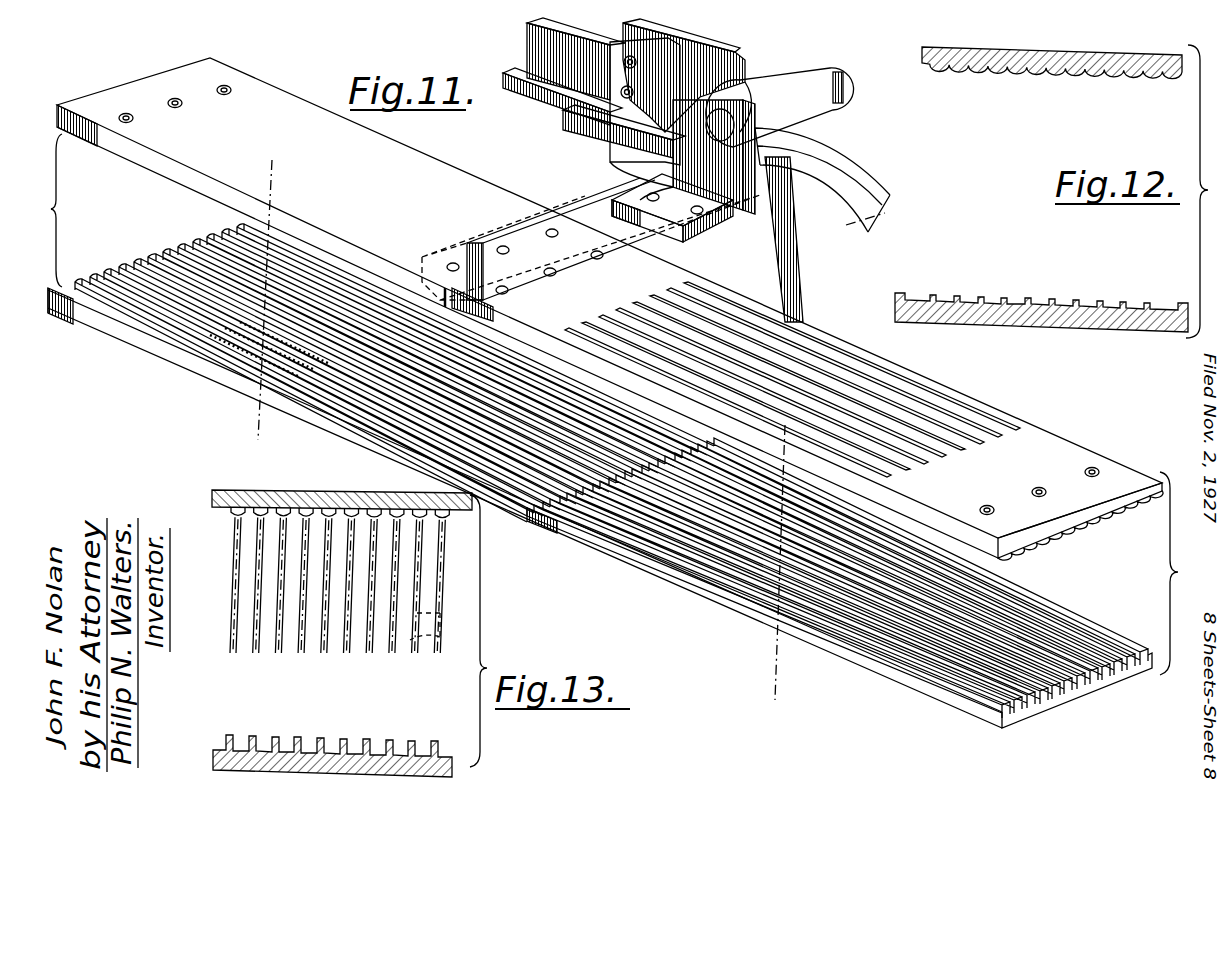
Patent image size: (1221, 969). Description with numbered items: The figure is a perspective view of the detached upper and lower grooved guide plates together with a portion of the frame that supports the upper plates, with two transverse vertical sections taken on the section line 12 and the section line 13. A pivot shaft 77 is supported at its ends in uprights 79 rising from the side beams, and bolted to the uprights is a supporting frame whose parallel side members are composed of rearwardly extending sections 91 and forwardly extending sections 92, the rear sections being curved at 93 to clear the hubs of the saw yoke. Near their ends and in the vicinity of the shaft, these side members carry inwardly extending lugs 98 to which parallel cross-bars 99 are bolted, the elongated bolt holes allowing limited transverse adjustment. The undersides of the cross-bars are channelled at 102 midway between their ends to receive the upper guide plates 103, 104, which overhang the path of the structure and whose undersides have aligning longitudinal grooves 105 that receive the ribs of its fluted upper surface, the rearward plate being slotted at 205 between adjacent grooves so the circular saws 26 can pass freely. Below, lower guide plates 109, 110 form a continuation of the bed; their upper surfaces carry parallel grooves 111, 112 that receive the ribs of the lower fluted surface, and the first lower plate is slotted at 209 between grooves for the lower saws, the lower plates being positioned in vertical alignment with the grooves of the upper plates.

In FIG. 11, the section line 12— 12 is at (262, 301).
In FIG. 11, the section line 13— 13 is at (783, 565).
In FIG. 13, the saws 26 is at (440, 612).
In FIG. 11, the pivot shaft 77 is at (838, 75).
In FIG. 11, the uprights 79 is at (800, 300).
In FIG. 11, the rearwardly extending sections 91 is at (860, 200).
In FIG. 11, the forwardly extending sections 92 is at (527, 35).
In FIG. 11, the curved portion 93 is at (855, 233).
In FIG. 11, the inwardly extending lugs 98 is at (700, 233).
In FIG. 11, the cross-bars 99 is at (605, 190).
In FIG. 11, the transverse channel 102 is at (591, 239).
In FIG. 11, the guide plate 103 is at (250, 78).
In FIG. 12, the guide plate 103 is at (1187, 70).
In FIG. 11, the rearward guide plate 104 is at (1053, 450).
In FIG. 13, the rearward guide plate 104 is at (212, 490).
In FIG. 11, the longitudinal grooves 105 is at (1092, 520).
In FIG. 12, the longitudinal grooves 105 is at (1070, 68).
In FIG. 13, the longitudinal grooves 105 is at (353, 507).
In FIG. 11, the lower guide plate 109 is at (147, 342).
In FIG. 12, the lower guide plate 109 is at (1178, 282).
In FIG. 11, the lower guide plate 110 is at (860, 650).
In FIG. 13, the lower guide plate 110 is at (452, 765).
In FIG. 11, the parallel grooves 111 is at (150, 258).
In FIG. 12, the parallel grooves 111 is at (1072, 298).
In FIG. 11, the parallel grooves 112 is at (1002, 672).
In FIG. 13, the parallel grooves 112 is at (315, 737).
In FIG. 11, the slots 205 is at (900, 420).
In FIG. 13, the slots 205 is at (357, 518).
In FIG. 11, the slots 209 is at (250, 344).